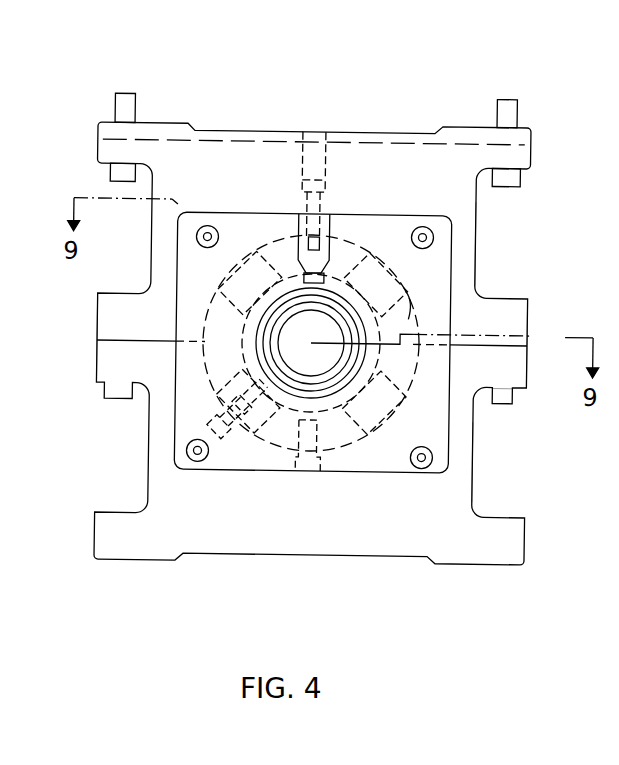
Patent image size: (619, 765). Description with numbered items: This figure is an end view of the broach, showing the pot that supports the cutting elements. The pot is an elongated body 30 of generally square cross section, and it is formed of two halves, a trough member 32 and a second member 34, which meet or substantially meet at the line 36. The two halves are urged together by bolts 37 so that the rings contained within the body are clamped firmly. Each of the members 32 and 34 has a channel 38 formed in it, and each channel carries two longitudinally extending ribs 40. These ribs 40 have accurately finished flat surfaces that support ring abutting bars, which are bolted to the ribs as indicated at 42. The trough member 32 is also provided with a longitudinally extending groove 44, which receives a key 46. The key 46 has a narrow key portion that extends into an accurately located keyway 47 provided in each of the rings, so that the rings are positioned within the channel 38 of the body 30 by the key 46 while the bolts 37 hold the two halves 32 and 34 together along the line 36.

The elongated body 30 is at (142, 223).
The trough member 32 is at (477, 270).
The member 34 is at (476, 472).
The line 36 is at (122, 346).
The bolts 37 is at (497, 402).
The channel 38 is at (432, 282).
The longitudinally extending ribs 40 is at (310, 352).
The ring abutting bars bolted to ribs 42 is at (213, 427).
The longitudinally extending groove 44 is at (322, 237).
The key 46 is at (300, 238).
The keyway 47 is at (176, 206).